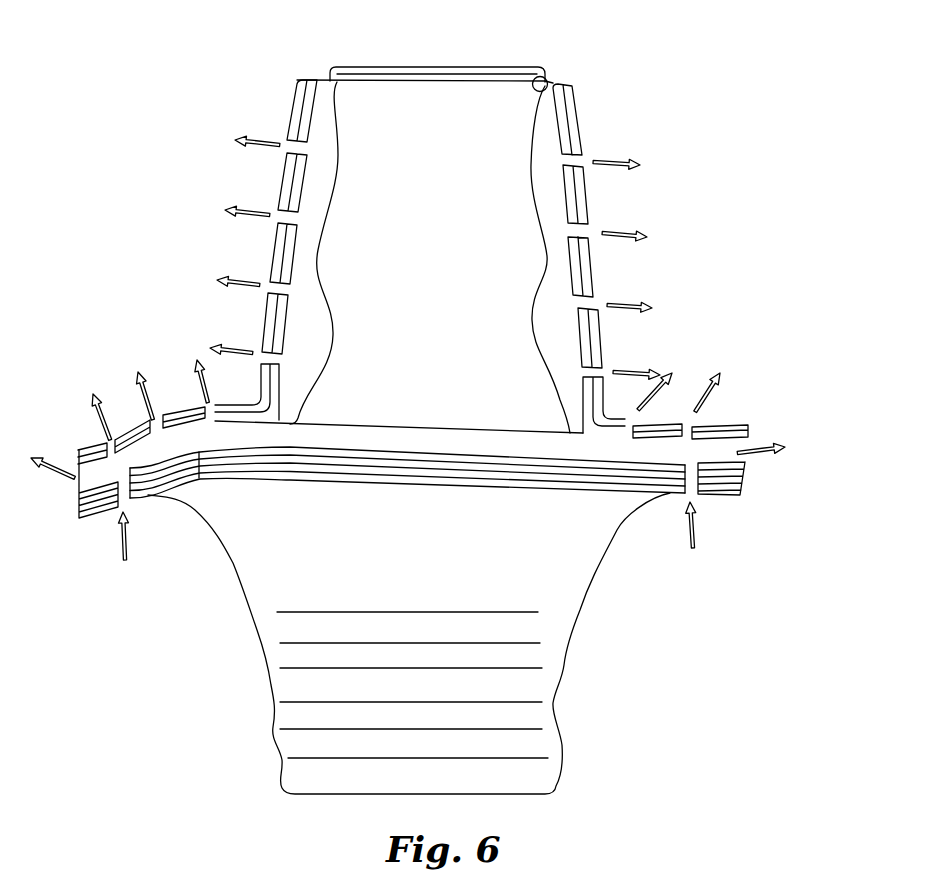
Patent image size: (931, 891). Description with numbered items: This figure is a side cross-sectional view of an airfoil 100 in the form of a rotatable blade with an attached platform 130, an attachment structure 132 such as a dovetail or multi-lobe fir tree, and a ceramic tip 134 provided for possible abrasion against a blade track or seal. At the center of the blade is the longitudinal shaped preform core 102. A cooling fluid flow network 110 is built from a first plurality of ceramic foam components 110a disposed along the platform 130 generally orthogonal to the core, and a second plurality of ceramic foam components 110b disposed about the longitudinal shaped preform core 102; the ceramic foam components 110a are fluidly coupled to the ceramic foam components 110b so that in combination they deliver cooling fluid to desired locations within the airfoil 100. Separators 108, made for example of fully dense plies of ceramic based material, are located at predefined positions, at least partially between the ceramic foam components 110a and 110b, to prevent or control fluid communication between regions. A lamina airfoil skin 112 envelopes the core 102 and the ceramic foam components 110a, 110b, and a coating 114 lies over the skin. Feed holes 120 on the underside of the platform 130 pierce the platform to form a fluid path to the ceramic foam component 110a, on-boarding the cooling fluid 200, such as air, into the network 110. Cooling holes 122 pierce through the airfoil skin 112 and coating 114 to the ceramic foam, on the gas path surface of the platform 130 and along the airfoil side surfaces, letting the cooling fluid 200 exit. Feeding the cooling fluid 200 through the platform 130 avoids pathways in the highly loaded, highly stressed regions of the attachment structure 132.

The airfoil 100 is at (672, 86).
The longitudinal shaped preform core 102 is at (436, 203).
The separators 108 is at (338, 100).
The cooling fluid flow network 110 is at (173, 104).
The first plurality of ceramic foam components 110a is at (232, 444).
The second plurality of ceramic foam components 110b is at (317, 173).
The lamina airfoil skin 112 is at (298, 82).
The coating 114 is at (298, 93).
The feed holes 120 is at (133, 508).
The cooling holes 122 is at (288, 142).
The platform 130 is at (728, 498).
The attachment structure 132 is at (553, 702).
The ceramic tip 134 is at (450, 67).
The cooling fluid 200 is at (275, 143).